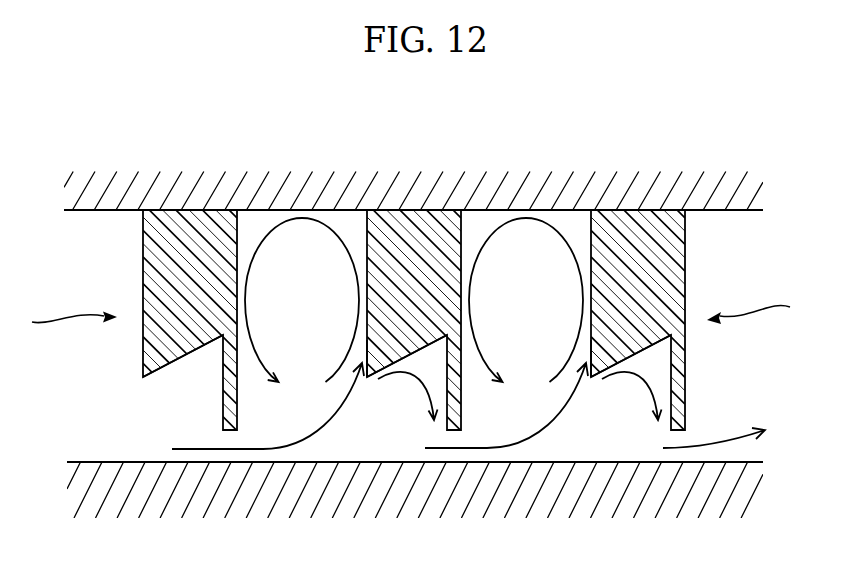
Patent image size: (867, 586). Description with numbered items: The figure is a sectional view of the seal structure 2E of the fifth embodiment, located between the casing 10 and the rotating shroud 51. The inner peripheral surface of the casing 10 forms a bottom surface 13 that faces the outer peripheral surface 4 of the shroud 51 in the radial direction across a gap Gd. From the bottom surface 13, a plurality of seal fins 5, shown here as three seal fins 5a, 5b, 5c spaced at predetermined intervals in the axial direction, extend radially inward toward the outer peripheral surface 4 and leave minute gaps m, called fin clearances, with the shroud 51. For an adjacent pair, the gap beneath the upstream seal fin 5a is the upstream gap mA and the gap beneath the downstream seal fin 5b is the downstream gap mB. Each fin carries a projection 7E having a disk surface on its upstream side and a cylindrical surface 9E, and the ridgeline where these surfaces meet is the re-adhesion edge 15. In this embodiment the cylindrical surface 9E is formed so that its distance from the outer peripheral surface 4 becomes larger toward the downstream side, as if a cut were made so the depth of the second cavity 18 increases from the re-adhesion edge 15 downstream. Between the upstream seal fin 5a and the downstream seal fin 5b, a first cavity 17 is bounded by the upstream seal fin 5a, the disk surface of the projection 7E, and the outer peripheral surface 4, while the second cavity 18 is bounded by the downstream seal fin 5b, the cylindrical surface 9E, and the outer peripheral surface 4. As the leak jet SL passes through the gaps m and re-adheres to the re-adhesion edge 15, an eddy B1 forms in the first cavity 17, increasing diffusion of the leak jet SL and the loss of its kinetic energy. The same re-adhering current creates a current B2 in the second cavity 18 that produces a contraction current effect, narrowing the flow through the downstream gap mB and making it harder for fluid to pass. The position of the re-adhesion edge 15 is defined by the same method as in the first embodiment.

The casing 10 is at (72, 212).
The bottom surface 13 is at (108, 212).
The first cavity 17 is at (332, 258).
The seal fins 5 is at (450, 318).
The upstream seal fin 5a is at (237, 232).
The downstream seal fin 5b is at (461, 232).
The seal fin 5c is at (680, 269).
The projection 7E is at (450, 318).
The cylindrical surface 9E is at (173, 363).
The re-adhesion edge 15 is at (367, 378).
The eddy B1 is at (253, 268).
The current B2 is at (403, 374).
The gaps m is at (468, 465).
The upstream gap mA is at (210, 456).
The downstream gap mB is at (440, 457).
The leak jet SL is at (268, 447).
The second cavity 18 is at (415, 427).
The outer peripheral surface 4 is at (123, 462).
The shroud 51 is at (90, 470).
The seal structure 2E is at (59, 318).
The gap Gd is at (763, 306).